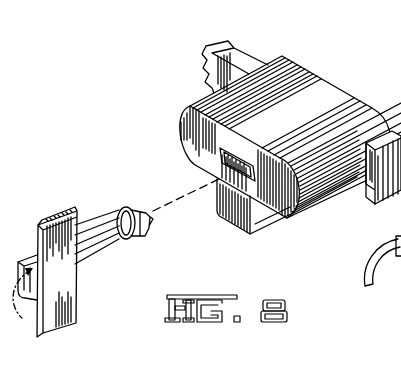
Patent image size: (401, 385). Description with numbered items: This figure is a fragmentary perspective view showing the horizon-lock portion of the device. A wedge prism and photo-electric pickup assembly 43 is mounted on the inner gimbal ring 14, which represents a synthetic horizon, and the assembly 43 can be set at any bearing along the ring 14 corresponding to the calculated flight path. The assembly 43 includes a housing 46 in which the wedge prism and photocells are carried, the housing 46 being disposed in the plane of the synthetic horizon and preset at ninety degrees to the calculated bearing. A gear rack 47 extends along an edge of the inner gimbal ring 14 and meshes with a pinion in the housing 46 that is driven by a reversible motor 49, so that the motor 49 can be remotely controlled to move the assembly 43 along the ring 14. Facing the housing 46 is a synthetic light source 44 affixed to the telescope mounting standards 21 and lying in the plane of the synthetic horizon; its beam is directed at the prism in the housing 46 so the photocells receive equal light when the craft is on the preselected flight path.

The inner gimbal ring 14 is at (229, 42).
The telescope mounting standards 21 is at (55, 312).
The wedge prism and photo-electric pickup assembly 43 is at (290, 145).
The synthetic light source 44 is at (133, 208).
The housing 46 is at (313, 97).
The gear rack 47 is at (377, 192).
The reversible motor 49 is at (232, 228).